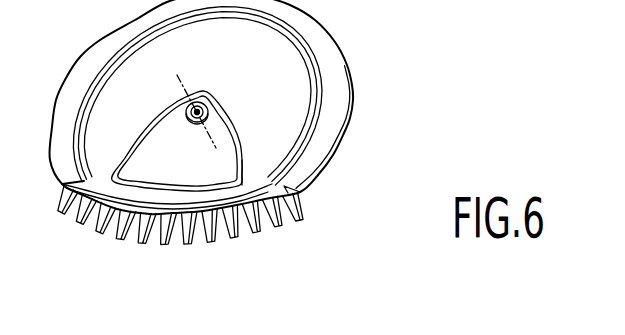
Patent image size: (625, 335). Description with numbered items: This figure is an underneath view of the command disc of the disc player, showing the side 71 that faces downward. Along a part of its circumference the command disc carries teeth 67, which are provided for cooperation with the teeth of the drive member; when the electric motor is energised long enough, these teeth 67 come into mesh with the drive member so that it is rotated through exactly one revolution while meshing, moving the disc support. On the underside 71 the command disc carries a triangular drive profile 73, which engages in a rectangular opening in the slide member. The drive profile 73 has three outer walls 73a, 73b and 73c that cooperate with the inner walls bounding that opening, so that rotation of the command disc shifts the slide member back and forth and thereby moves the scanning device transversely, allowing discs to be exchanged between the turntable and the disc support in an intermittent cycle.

The side of the command disc 71 is at (285, 100).
The triangular drive profile 73 is at (205, 91).
The outer wall 73a is at (137, 200).
The outer wall 73b is at (147, 123).
The outer wall 73c is at (245, 163).
The teeth 67 is at (273, 207).